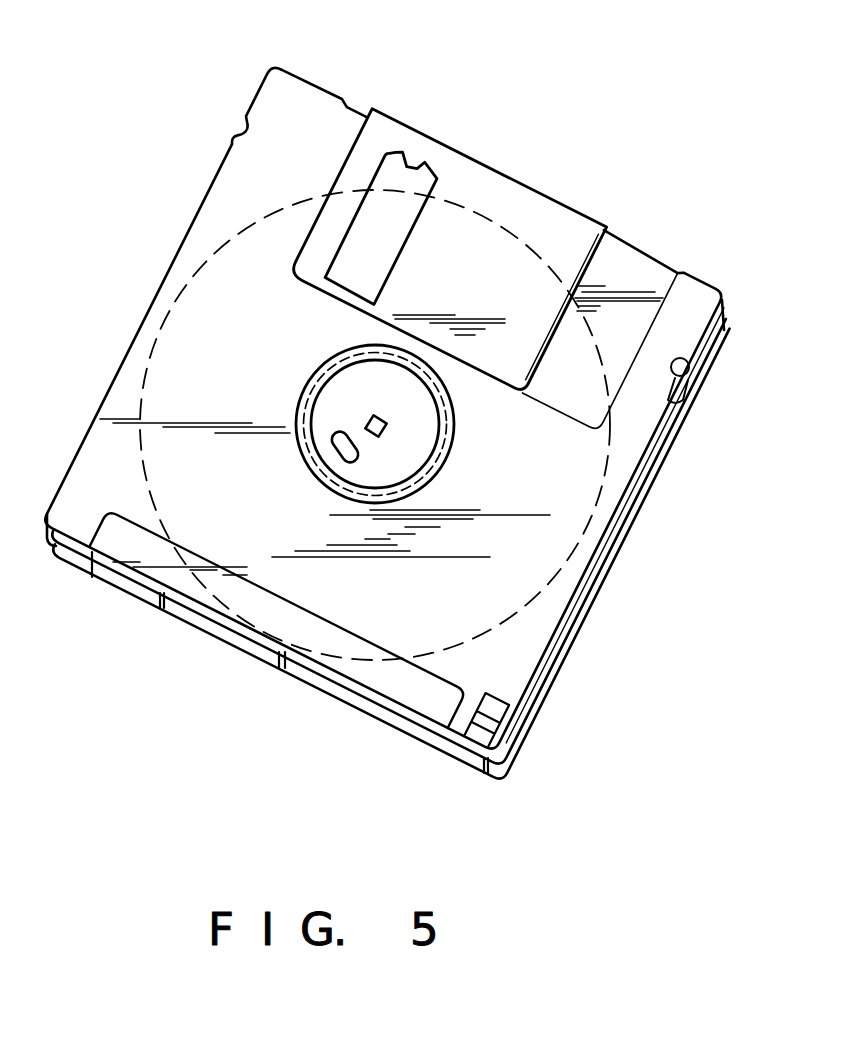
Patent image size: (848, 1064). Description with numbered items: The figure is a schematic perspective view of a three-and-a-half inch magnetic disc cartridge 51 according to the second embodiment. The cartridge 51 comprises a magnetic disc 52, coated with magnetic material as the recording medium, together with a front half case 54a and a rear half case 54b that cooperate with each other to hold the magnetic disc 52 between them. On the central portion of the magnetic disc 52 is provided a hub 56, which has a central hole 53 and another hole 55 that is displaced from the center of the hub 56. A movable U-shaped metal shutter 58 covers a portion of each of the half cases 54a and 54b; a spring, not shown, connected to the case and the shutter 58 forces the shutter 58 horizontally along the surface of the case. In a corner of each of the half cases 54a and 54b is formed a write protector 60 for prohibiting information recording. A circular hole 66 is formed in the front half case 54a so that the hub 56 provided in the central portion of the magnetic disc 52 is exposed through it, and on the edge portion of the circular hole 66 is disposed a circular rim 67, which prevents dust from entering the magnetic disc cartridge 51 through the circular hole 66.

The magnetic disc cartridge 51 is at (426, 119).
The magnetic disc 52 is at (480, 620).
The central hole 53 is at (368, 414).
The front half case 54a is at (647, 413).
The rear half case 54b is at (578, 605).
The hole 55 is at (333, 437).
The hub 56 is at (424, 412).
The shutter 58 is at (564, 204).
The write protector 60 is at (505, 745).
The circular hole 66 is at (444, 445).
The circular rim 67 is at (324, 487).